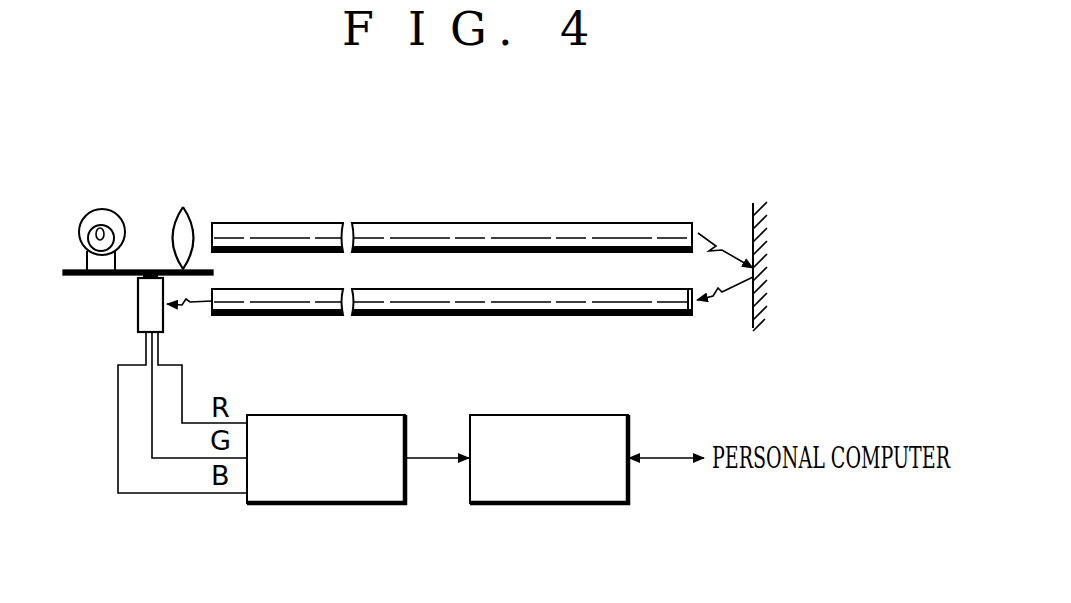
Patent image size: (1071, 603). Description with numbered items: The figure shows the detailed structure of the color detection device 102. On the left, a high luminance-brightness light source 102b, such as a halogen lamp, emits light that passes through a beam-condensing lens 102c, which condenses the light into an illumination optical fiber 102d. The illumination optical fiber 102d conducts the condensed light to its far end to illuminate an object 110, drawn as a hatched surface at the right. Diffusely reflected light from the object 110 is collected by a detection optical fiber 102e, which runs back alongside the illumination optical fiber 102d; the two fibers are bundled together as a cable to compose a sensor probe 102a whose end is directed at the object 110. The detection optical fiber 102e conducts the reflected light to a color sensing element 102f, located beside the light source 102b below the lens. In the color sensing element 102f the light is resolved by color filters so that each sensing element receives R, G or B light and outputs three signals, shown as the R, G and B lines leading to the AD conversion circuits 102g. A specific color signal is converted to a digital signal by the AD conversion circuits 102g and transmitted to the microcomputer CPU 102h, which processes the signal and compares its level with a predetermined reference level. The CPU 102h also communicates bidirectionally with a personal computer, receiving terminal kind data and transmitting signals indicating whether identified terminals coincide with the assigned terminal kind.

The color detection device 102 is at (463, 137).
The sensor probe 102a is at (680, 268).
The light source 102b is at (102, 208).
The beam-condensing lens 102c is at (185, 215).
The illumination optical fiber 102d is at (458, 228).
The detection optical fiber 102e is at (488, 305).
The color sensing element 102f is at (145, 292).
The AD conversion circuits 102g is at (338, 507).
The microcomputer (CPU) 102h is at (553, 505).
The object 110 is at (752, 232).